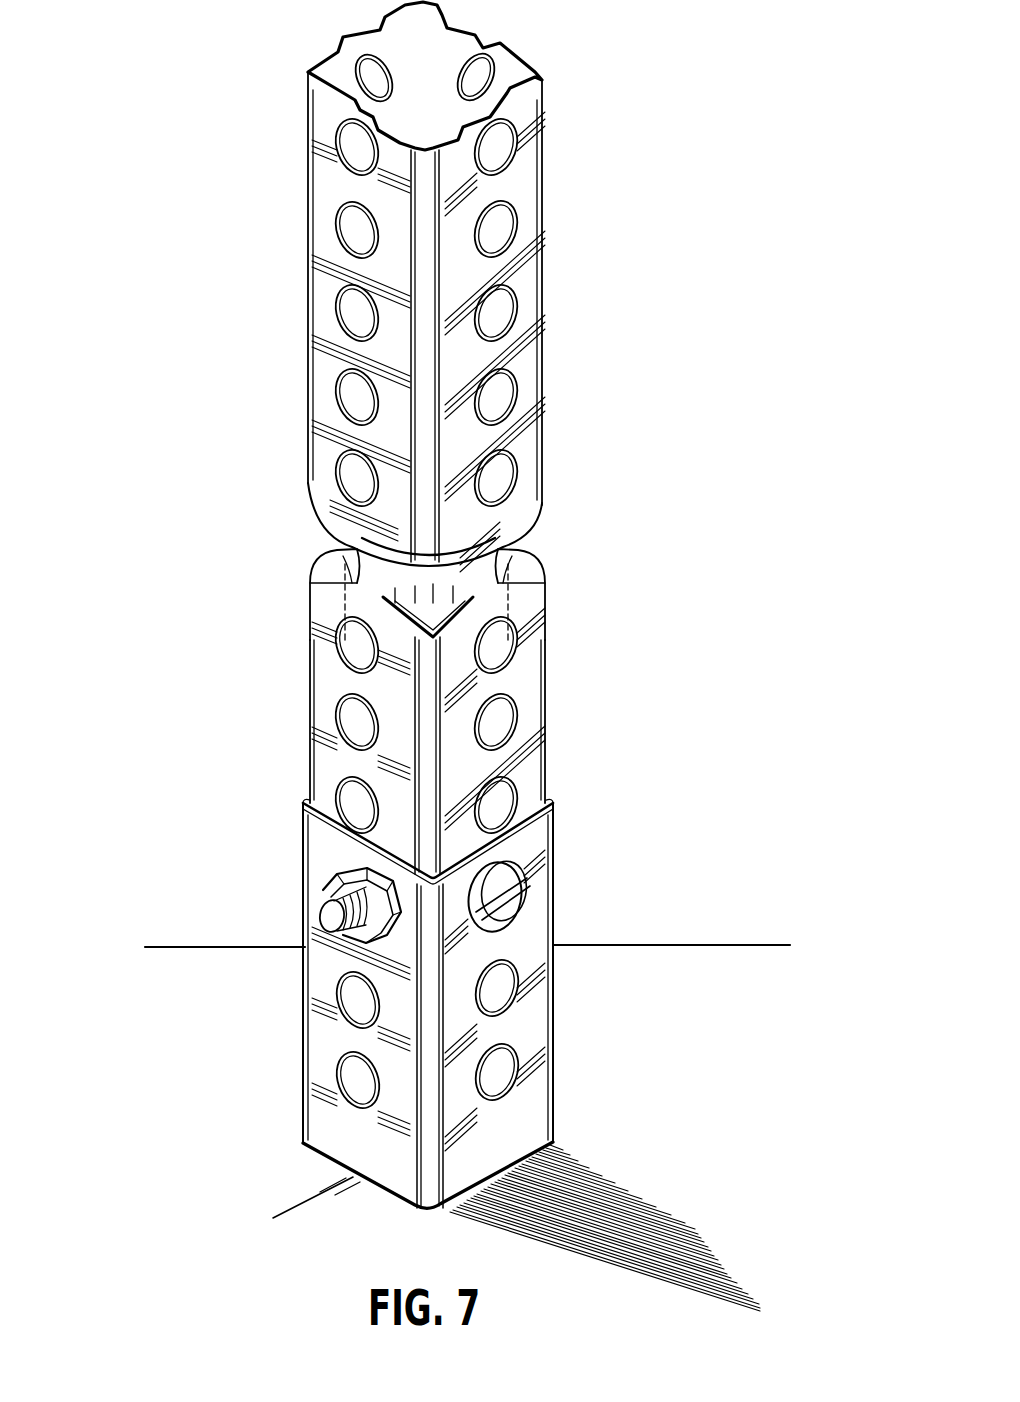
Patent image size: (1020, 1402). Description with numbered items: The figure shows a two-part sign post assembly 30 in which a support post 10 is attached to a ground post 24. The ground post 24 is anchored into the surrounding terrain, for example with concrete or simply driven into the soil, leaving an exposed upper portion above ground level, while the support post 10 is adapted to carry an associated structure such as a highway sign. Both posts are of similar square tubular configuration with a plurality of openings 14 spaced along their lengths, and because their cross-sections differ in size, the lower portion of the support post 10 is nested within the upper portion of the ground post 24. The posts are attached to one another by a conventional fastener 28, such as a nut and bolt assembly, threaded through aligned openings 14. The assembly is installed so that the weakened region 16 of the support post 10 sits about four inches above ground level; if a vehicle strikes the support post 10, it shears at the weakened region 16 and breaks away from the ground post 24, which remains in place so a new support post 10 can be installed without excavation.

The support post 10 is at (543, 139).
The openings 14 is at (497, 390).
The weakened region 16 is at (563, 495).
The ground post 24 is at (557, 997).
The fastener 28 is at (320, 918).
The sign post assembly 30 is at (168, 494).